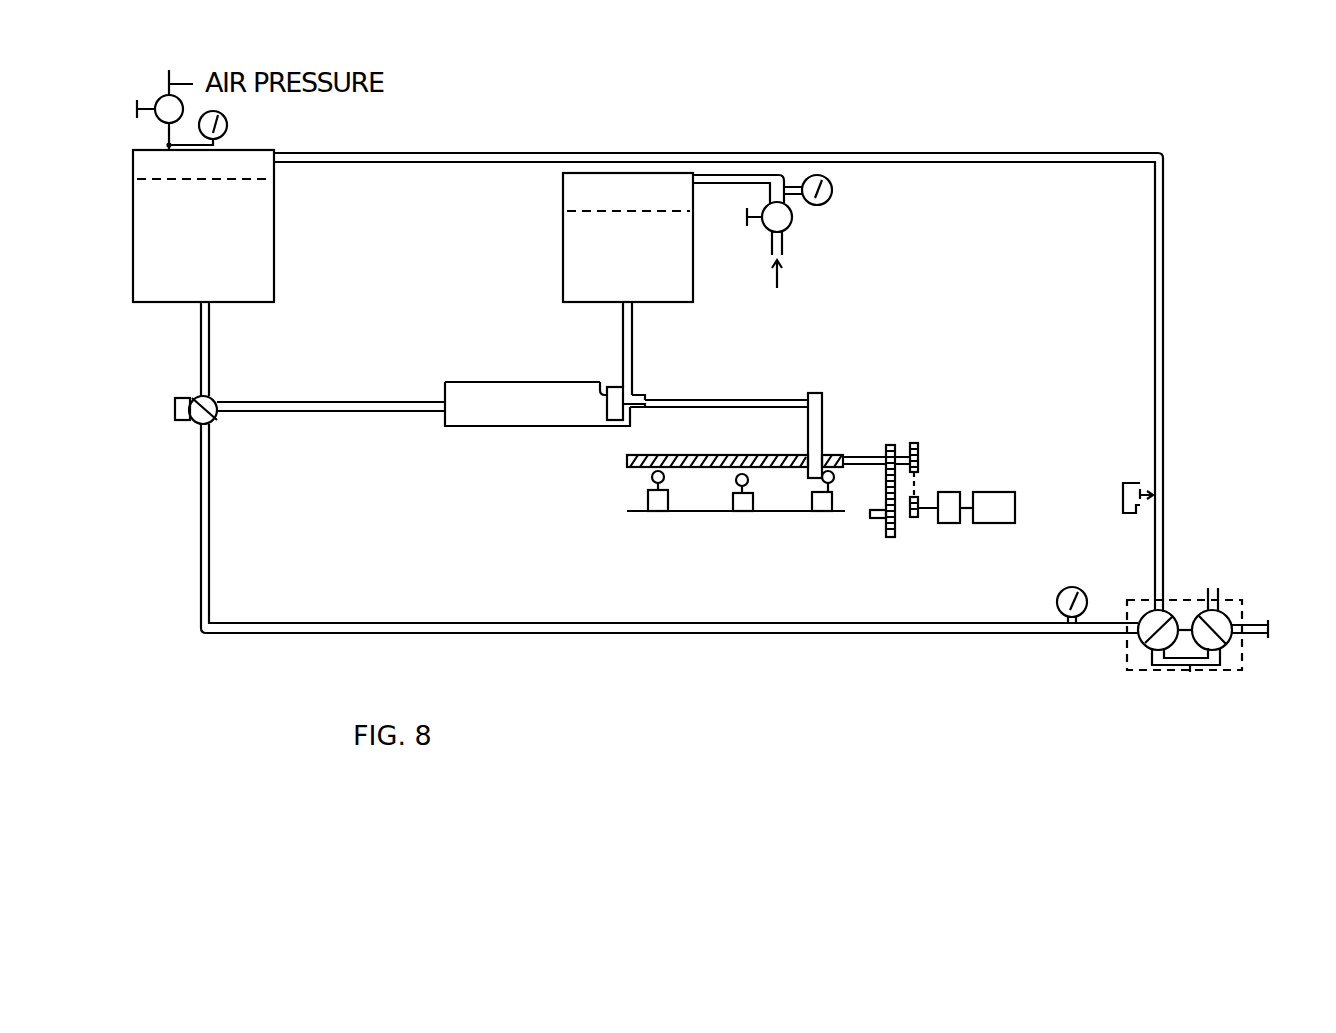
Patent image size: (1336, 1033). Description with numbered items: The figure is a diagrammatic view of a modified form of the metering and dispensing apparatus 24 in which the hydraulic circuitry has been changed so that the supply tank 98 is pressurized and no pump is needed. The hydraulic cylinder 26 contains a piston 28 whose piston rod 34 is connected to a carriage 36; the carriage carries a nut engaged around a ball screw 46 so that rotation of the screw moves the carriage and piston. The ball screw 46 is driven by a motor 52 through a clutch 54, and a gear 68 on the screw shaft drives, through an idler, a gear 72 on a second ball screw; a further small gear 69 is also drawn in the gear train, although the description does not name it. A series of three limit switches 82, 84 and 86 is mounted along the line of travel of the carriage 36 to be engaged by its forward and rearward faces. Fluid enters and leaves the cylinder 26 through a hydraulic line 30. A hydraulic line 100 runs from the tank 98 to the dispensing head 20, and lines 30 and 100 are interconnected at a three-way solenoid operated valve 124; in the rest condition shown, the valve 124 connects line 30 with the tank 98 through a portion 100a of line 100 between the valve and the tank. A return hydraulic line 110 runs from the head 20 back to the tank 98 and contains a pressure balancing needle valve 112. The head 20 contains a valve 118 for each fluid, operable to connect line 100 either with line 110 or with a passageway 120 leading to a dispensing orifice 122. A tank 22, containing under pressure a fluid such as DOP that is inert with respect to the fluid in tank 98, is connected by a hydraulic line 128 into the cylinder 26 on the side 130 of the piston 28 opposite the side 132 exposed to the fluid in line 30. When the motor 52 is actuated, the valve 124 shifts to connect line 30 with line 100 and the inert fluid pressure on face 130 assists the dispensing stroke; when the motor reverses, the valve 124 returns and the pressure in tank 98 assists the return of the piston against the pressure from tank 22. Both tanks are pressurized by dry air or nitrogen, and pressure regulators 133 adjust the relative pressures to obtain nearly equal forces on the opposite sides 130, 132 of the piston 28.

The dispensing head 20 is at (1210, 629).
The tank 22 is at (563, 222).
The apparatus 24 is at (936, 473).
The hydraulic cylinder 26 is at (470, 426).
The piston 28 is at (613, 420).
The hydraulic line 30 is at (350, 402).
The piston rod 34 is at (755, 401).
The carriage 36 is at (808, 428).
The ball screw 46 is at (839, 455).
The motor 52 is at (1010, 492).
The clutch 54 is at (955, 523).
The gear 68 is at (892, 445).
The pinion 69 is at (919, 455).
The gear 72 is at (896, 530).
The limit switch 82 is at (823, 511).
The limit switch 84 is at (742, 511).
The limit switch 86 is at (657, 511).
The tank 98 is at (137, 233).
The hydraulic line 100 is at (201, 500).
The portion of line 100 100a is at (201, 358).
The hydraulic line 110 is at (375, 163).
The pressure balancing needle valve 112 is at (1136, 513).
The valve 118 is at (1200, 612).
The passageway 120 is at (1162, 672).
The dispensing orifice 122 is at (1198, 672).
The three-way solenoid operated valve 124 is at (190, 418).
The hydraulic line 128 is at (633, 355).
The side of piston 130 is at (635, 398).
The side of piston 132 is at (600, 382).
The pressure regulator 133 is at (160, 100).